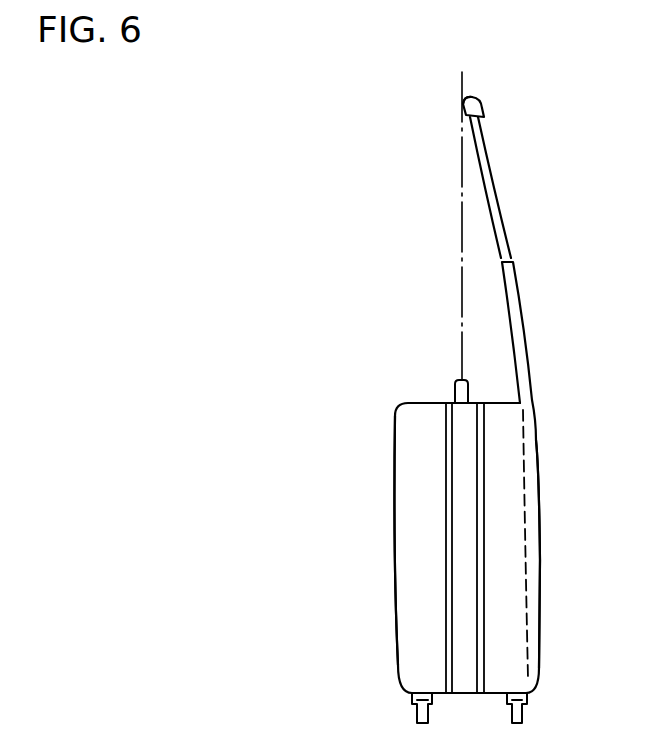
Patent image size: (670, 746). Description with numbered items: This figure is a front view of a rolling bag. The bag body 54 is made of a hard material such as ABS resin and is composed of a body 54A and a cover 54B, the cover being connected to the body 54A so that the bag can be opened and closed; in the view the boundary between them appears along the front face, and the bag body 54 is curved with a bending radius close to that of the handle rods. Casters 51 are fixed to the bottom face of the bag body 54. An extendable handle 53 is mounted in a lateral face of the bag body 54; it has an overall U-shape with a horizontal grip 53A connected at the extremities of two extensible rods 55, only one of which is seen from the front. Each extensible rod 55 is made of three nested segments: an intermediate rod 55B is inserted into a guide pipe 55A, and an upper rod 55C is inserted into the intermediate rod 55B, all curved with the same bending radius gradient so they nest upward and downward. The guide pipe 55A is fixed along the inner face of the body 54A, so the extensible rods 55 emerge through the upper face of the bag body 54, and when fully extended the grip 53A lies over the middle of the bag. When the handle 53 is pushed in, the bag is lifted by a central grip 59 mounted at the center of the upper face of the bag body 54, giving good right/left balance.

The casters 51 is at (420, 714).
The extendable handle 53 is at (485, 87).
The horizontal grip 53A is at (466, 108).
The bag body 54 is at (388, 393).
The body 54A is at (502, 502).
The cover 54B is at (400, 544).
The extensible rods 55 is at (555, 392).
The guide pipes 55A is at (532, 612).
The intermediate rods 55B is at (524, 378).
The upper rods 55C is at (490, 187).
The central grip 59 is at (462, 382).